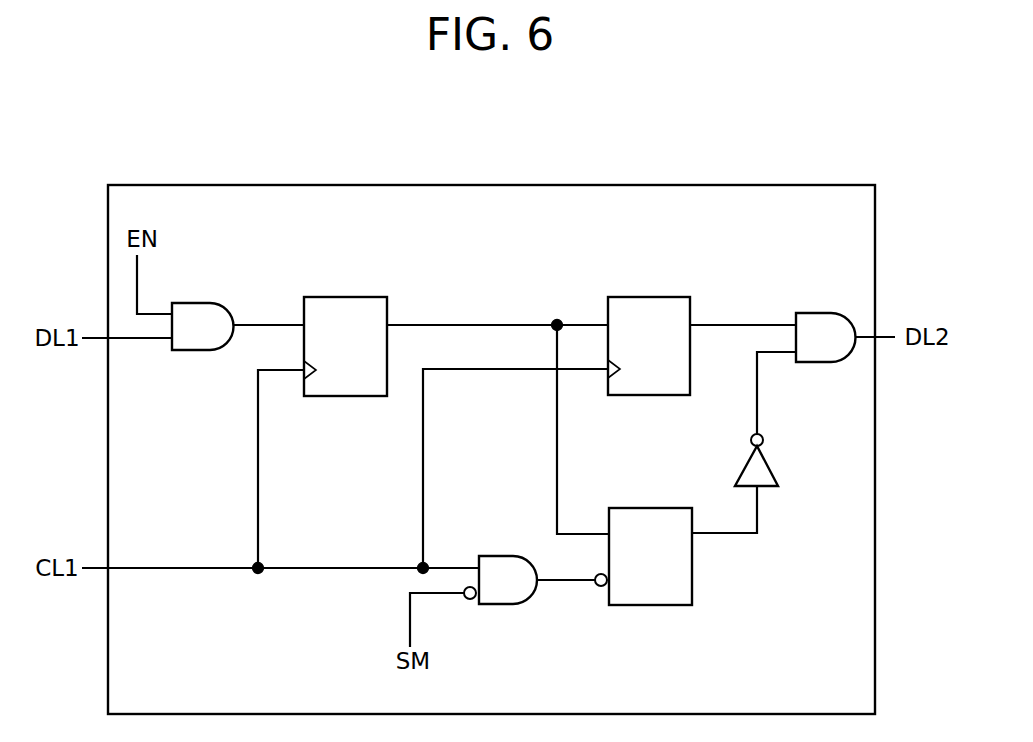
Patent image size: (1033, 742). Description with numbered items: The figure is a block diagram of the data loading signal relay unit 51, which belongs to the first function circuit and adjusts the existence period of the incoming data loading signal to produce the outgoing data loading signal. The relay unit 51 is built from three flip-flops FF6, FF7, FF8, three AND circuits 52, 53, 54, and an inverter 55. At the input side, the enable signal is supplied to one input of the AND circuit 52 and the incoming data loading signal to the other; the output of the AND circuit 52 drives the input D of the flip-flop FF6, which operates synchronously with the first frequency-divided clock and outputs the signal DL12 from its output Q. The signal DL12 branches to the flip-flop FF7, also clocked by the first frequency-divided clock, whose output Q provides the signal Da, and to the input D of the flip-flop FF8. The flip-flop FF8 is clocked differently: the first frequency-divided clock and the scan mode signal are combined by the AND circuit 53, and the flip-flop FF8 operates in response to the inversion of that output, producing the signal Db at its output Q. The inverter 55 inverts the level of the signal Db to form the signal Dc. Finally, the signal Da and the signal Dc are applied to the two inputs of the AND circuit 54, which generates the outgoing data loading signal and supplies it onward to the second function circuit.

The data loading signal relay unit 51 is at (732, 185).
The AND circuit 52 is at (205, 303).
The AND circuit 53 is at (512, 556).
The AND circuit 54 is at (829, 313).
The inverter 55 is at (774, 475).
The flip-flop FF6 is at (360, 297).
The flip-flop FF7 is at (648, 297).
The flip-flop FF8 is at (650, 508).
The signal DL12 is at (460, 325).
The signal Da is at (732, 325).
The signal Db is at (723, 536).
The signal Dc is at (757, 400).